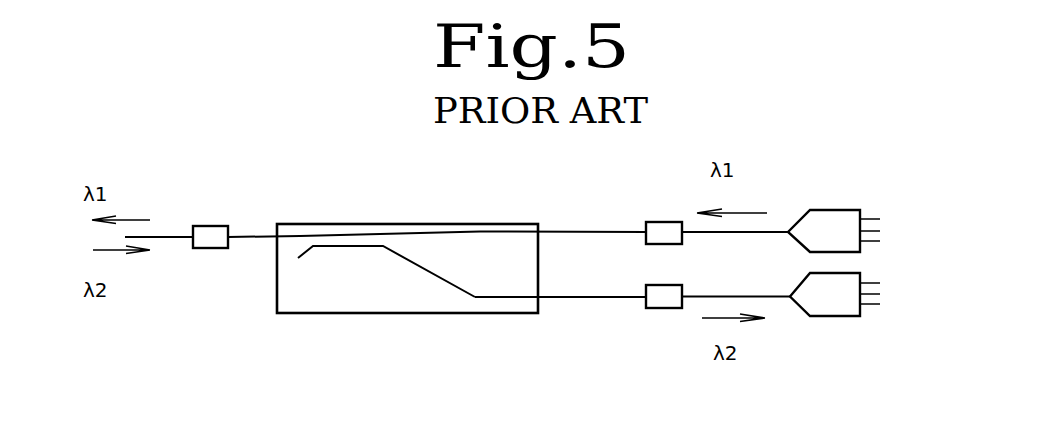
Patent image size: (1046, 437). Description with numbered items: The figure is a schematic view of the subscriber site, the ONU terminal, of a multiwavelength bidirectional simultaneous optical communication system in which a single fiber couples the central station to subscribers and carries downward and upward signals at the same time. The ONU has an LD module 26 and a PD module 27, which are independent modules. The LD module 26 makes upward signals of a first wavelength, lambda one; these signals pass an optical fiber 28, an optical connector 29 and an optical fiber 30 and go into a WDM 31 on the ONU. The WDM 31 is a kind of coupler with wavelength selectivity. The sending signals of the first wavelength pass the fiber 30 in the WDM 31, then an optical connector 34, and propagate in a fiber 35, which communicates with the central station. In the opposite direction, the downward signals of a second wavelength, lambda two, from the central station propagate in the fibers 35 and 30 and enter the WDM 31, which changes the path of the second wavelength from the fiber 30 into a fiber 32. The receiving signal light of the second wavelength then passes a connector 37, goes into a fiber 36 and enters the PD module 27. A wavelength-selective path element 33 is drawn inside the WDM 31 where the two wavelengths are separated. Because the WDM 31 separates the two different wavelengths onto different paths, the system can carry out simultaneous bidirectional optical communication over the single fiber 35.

The LD module 26 is at (843, 212).
The PD module 27 is at (848, 305).
The optical fiber 28 is at (722, 233).
The optical connector 29 is at (665, 222).
The optical fiber 30 is at (473, 231).
The WDM 31 is at (407, 268).
The fiber 32 is at (477, 295).
The coupling waveguide 33 is at (350, 246).
The optical connector 34 is at (213, 234).
The fiber 35 is at (167, 236).
The fiber 36 is at (762, 296).
The connector 37 is at (668, 308).